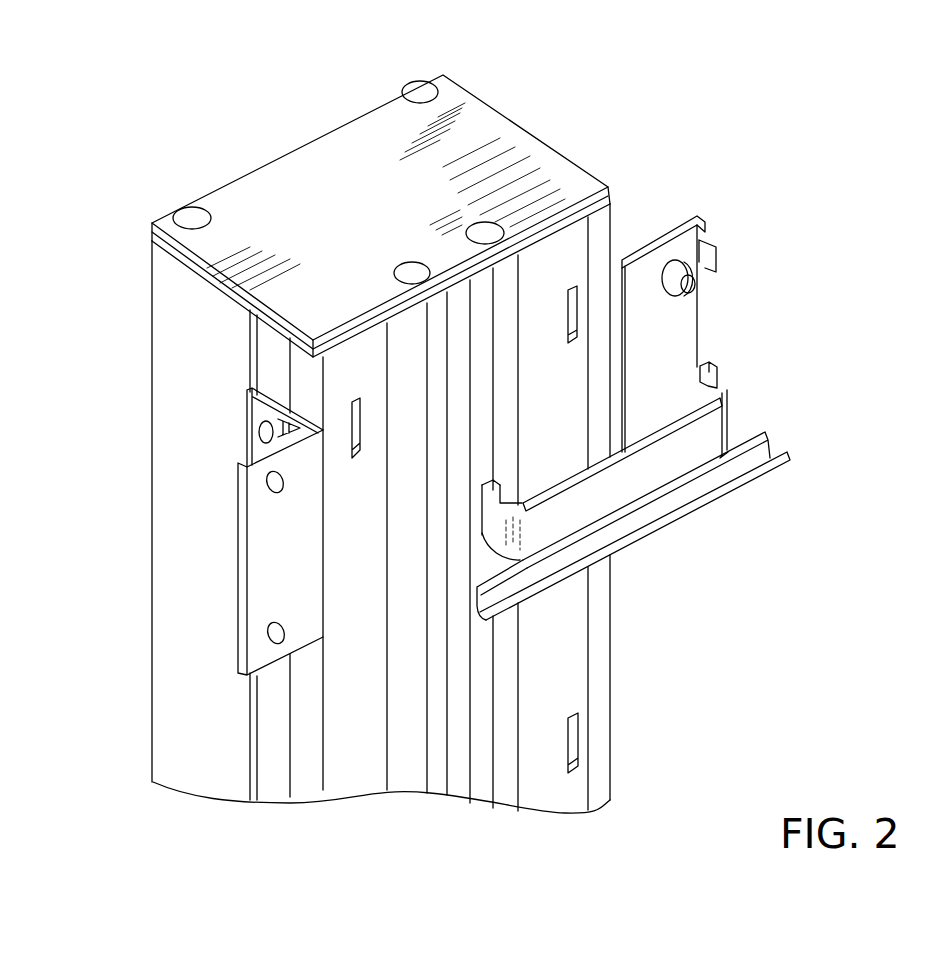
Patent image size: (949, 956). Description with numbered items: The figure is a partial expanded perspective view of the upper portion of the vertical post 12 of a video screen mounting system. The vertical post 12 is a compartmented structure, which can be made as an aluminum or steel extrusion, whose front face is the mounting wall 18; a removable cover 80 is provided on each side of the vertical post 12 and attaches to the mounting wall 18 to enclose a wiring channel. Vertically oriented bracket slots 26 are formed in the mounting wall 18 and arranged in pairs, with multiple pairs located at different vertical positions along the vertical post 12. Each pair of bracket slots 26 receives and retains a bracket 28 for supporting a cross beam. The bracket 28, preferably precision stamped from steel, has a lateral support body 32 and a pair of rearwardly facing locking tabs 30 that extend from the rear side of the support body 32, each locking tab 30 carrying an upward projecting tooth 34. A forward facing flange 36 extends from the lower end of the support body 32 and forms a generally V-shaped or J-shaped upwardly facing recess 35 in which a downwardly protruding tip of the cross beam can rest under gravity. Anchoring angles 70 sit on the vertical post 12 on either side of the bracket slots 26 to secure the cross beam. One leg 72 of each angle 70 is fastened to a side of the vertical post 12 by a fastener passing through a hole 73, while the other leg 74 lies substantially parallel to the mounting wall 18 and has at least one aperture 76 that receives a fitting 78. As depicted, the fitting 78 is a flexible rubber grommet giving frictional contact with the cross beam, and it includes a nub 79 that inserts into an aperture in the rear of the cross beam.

The vertical post 12 is at (410, 444).
The front mounting wall 18 is at (549, 258).
The bracket slot 26 is at (578, 305).
The bracket 28 is at (632, 487).
The locking tab 30 is at (497, 536).
The lateral support body 32 is at (697, 430).
The upward projecting tooth 34 is at (485, 490).
The upwardly facing recess 35 is at (483, 613).
The forward facing flange 36 is at (717, 490).
The anchoring angle 70 is at (449, 445).
The leg 72 is at (258, 414).
The hole 73 is at (262, 434).
The leg 74 is at (273, 577).
The aperture 76 is at (275, 490).
The fitting 78 is at (700, 263).
The nub 79 is at (690, 286).
The removable cover 80 is at (192, 358).